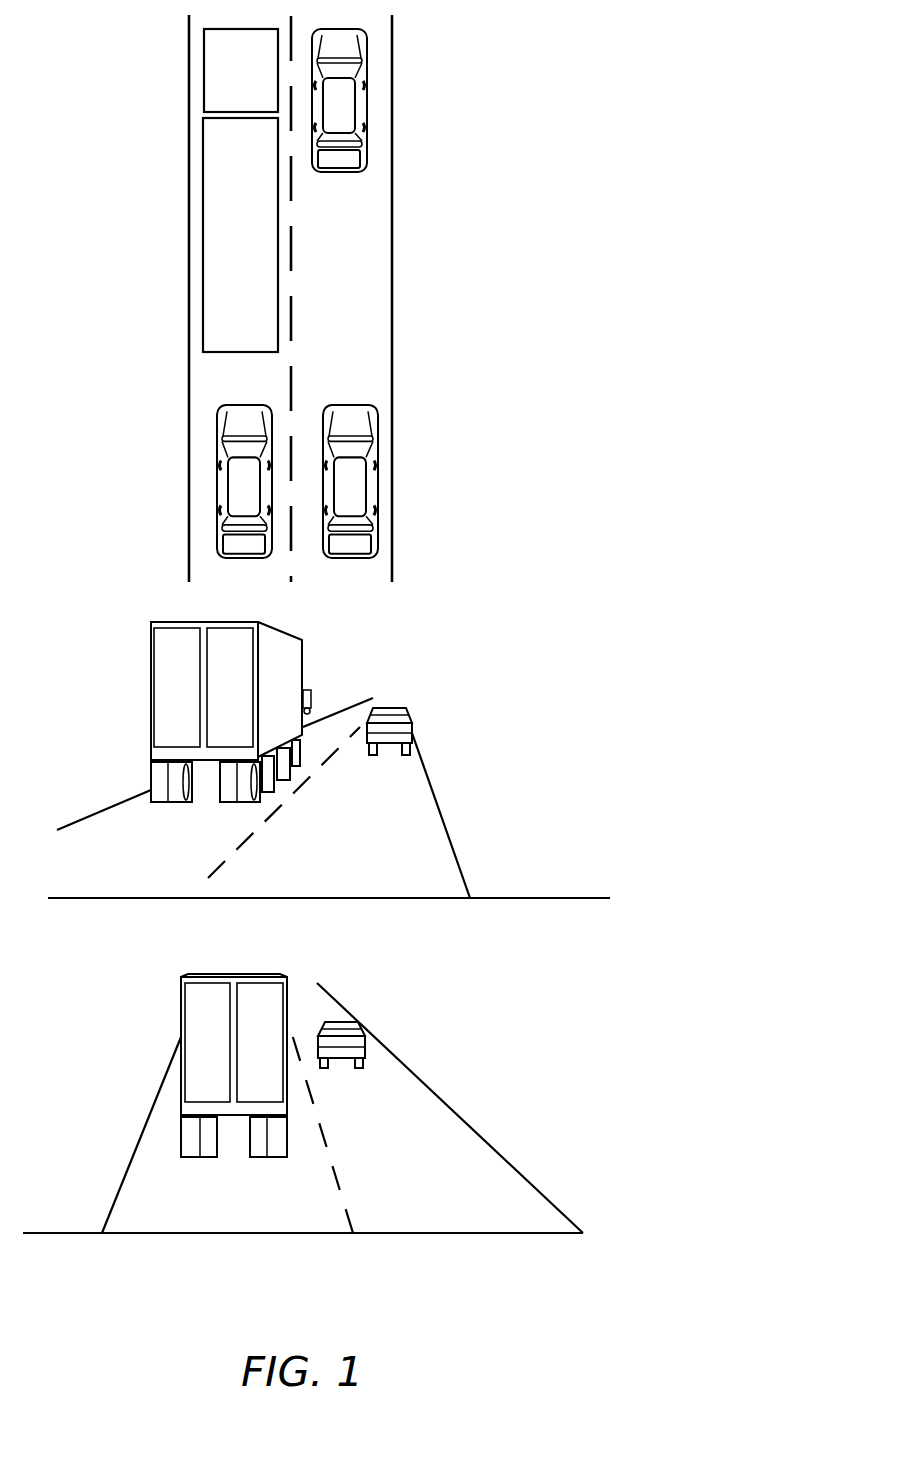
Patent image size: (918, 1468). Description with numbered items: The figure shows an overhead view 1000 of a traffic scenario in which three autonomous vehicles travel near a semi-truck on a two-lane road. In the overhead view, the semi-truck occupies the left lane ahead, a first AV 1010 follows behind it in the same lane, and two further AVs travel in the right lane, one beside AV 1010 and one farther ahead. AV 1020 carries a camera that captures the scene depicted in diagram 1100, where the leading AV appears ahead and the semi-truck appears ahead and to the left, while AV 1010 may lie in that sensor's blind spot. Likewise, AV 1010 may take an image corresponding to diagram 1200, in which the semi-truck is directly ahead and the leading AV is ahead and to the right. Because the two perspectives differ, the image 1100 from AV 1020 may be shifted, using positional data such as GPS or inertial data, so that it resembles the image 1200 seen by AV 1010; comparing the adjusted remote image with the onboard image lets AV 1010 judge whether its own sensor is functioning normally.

The overhead view 1000 is at (500, 100).
The AV 1010 is at (217, 478).
The AV 1020 is at (378, 462).
The diagram 1100 is at (526, 631).
The diagram 1200 is at (463, 995).